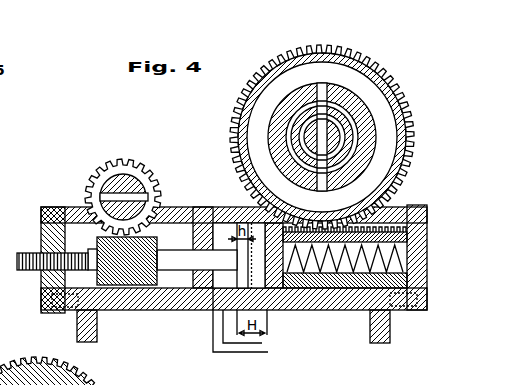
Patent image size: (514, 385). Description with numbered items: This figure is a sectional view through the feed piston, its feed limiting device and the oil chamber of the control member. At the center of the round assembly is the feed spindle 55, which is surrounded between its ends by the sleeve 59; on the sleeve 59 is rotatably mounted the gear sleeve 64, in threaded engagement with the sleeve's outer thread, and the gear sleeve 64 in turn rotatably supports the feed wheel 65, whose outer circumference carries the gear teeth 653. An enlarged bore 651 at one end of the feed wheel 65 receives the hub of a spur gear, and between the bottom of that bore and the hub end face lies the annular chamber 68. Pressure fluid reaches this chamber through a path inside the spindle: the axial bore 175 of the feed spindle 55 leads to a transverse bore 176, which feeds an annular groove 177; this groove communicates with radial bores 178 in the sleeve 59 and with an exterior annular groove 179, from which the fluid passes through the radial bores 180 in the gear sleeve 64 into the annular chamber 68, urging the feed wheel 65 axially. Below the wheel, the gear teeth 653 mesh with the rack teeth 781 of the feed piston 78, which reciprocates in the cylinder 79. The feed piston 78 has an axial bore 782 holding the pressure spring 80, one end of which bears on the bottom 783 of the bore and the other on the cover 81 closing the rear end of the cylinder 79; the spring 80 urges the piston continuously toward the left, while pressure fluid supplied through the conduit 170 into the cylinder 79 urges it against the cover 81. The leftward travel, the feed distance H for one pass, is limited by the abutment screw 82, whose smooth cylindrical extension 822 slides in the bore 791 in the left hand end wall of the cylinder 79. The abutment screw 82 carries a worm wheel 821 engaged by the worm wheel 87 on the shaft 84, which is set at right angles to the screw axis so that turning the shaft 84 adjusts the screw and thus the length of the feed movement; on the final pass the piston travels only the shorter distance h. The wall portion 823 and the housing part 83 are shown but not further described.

The feed spindle 55 is at (333, 143).
The sleeve 59 is at (272, 107).
The gear sleeve 64 is at (308, 82).
The feed wheel 65 is at (292, 62).
The enlarged bore 651 is at (323, 55).
The gear teeth 653 is at (272, 65).
The annular chamber 68 is at (363, 83).
The feed piston 78 is at (282, 282).
The rack teeth 781 is at (363, 227).
The axial bore 782 is at (350, 243).
The bottom 783 is at (287, 263).
The cylinder 79 is at (242, 262).
The bore 791 is at (205, 213).
The pressure spring 80 is at (392, 253).
The cover 81 is at (417, 268).
The abutment screw 82 is at (35, 265).
The worm wheel 821 is at (122, 261).
The smooth cylindrical extension 822 is at (197, 260).
The partition wall 823 is at (223, 289).
The housing left wall 83 is at (50, 241).
The shaft 84 is at (133, 192).
The worm wheel 87 is at (133, 162).
The conduit 170 is at (230, 347).
The axial bore 175 is at (353, 167).
The transverse bore 176 is at (340, 130).
The annular groove 177 is at (322, 127).
The radial bores 178 is at (333, 107).
The exterior annular groove 179 is at (357, 170).
The radial bores 180 is at (332, 82).